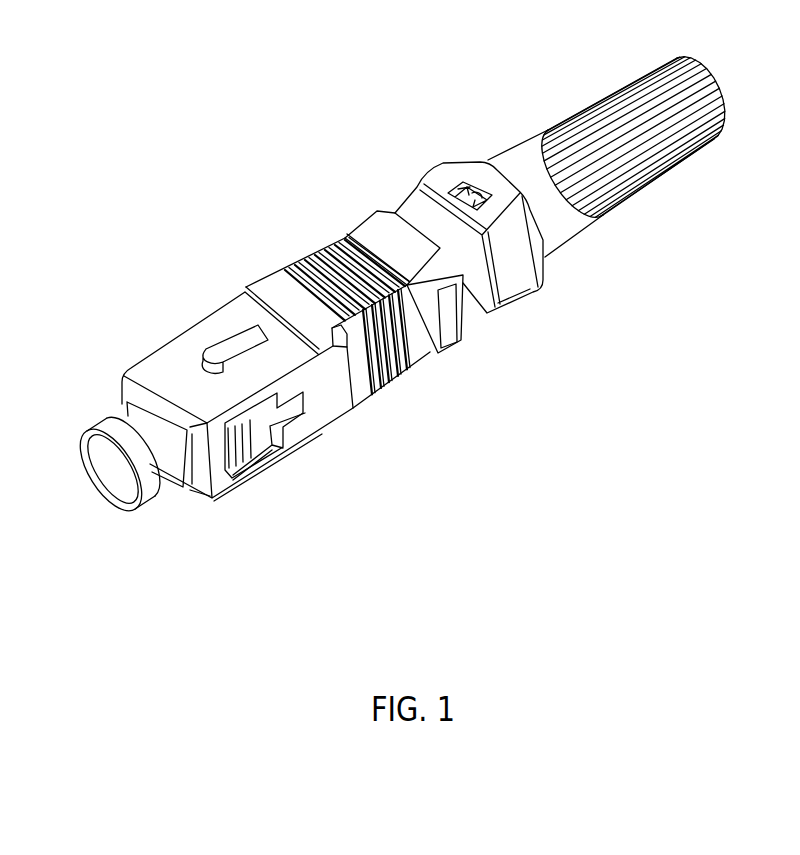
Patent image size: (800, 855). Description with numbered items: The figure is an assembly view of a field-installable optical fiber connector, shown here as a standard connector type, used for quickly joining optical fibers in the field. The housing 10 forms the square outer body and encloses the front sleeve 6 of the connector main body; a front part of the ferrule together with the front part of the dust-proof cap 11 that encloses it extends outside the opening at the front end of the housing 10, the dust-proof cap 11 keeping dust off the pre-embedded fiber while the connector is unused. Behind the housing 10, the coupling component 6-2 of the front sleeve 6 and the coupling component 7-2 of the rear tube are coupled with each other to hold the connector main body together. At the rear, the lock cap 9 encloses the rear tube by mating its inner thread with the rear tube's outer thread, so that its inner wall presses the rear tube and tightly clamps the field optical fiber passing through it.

The front sleeve 6 is at (263, 425).
The coupling component 6-2 is at (458, 189).
The coupling component 7-2 is at (477, 196).
The lock cap 9 is at (558, 207).
The housing 10 is at (325, 412).
The dust-proof cap 11 is at (112, 479).